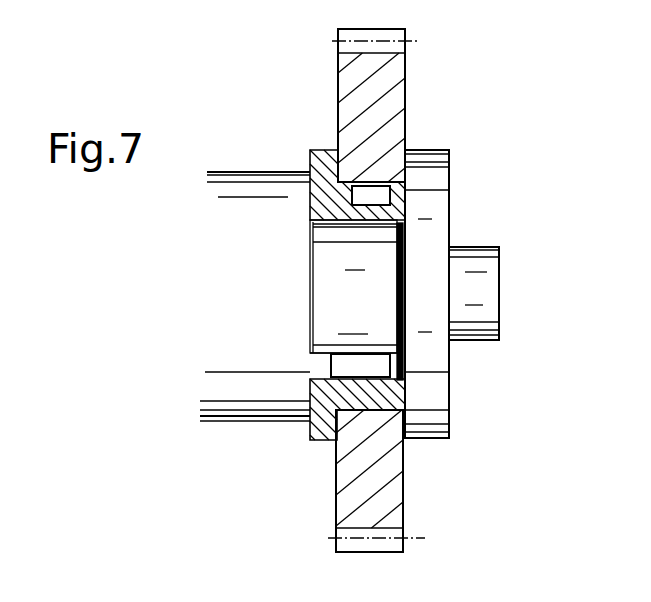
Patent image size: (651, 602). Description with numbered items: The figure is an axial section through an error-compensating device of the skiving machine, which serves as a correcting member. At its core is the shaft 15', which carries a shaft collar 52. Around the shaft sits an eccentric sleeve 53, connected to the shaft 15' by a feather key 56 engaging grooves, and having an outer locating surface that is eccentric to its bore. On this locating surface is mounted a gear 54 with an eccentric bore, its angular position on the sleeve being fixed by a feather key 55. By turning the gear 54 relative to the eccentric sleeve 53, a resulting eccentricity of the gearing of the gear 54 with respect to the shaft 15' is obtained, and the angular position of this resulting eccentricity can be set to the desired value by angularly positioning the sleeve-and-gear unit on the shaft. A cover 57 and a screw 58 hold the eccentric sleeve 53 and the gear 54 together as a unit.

The shaft 15' is at (255, 264).
The shaft collar 52 is at (312, 294).
The eccentric sleeve 53 is at (393, 208).
The gear with eccentric bore 54 is at (382, 98).
The feather key 55 is at (405, 183).
The feather key 56 is at (372, 371).
The cover 57 is at (430, 238).
The screw 58 is at (474, 292).